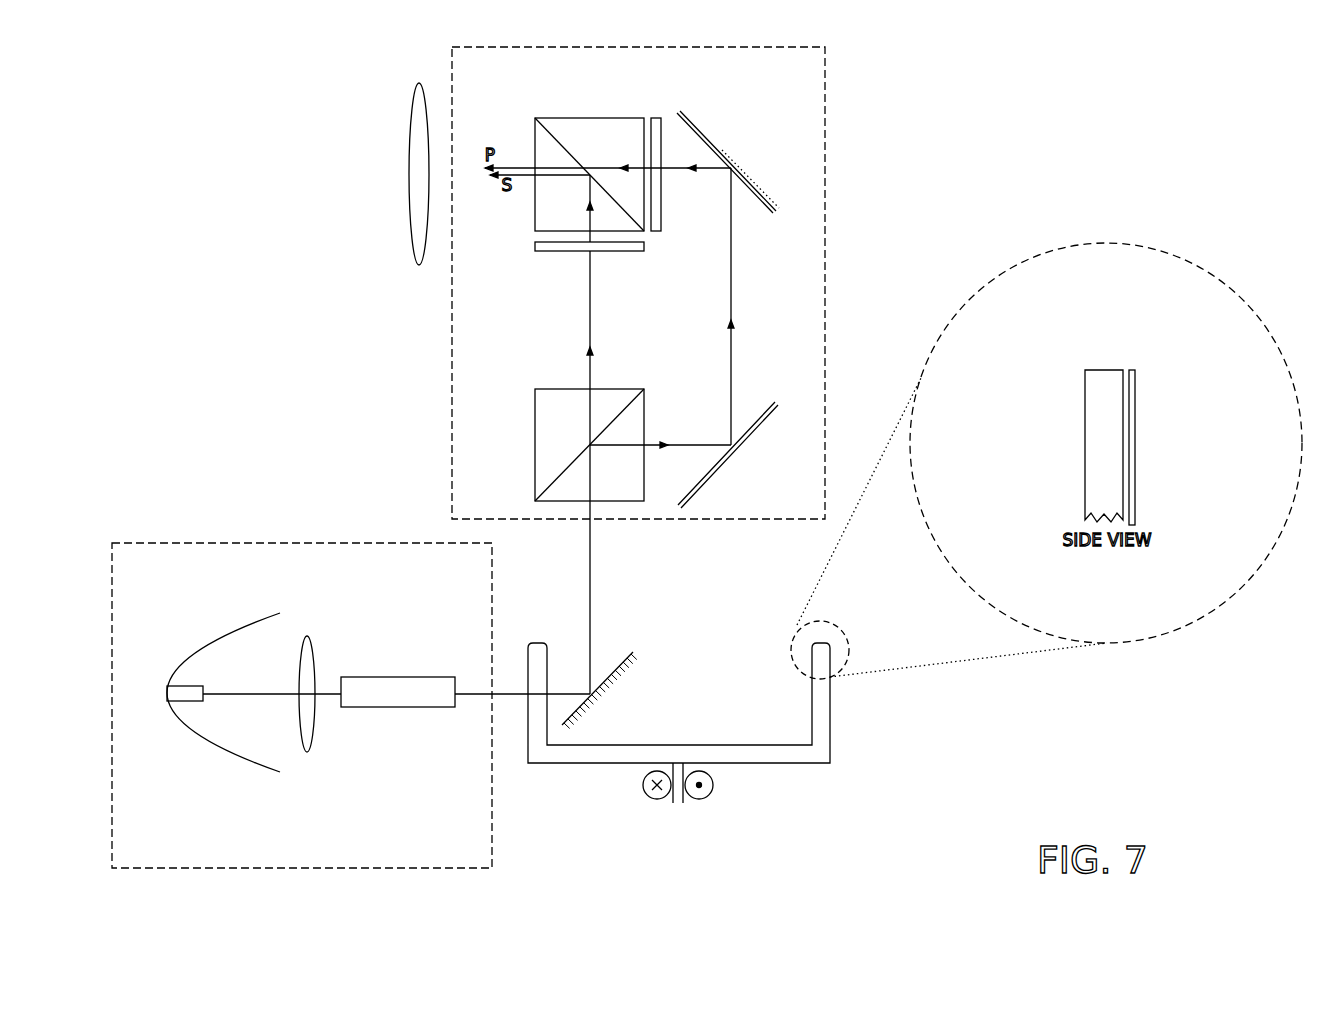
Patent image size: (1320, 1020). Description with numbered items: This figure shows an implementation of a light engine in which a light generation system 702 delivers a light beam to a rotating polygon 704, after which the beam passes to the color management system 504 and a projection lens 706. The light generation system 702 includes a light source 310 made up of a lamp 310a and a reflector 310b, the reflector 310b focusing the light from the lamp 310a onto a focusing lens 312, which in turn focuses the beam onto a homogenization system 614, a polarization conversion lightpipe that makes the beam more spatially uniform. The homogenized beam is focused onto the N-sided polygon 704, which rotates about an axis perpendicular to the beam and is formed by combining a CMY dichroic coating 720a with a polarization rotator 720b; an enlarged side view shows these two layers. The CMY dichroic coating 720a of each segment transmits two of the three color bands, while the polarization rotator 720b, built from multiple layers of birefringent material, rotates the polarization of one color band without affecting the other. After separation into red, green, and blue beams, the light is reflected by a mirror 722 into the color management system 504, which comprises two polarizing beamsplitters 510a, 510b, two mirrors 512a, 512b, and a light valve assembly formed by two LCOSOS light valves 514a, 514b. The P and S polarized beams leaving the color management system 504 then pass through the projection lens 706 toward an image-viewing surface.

The projection lens 706 is at (361, 174).
The color management system 504 is at (638, 300).
The polarizing beamsplitter 510b is at (593, 133).
The polarizing beamsplitter 510a is at (554, 426).
The mirror 512b is at (744, 162).
The mirror 512a is at (745, 455).
The LCOSOS light valve 514b is at (657, 234).
The LCOSOS light valve 514a is at (556, 252).
The light generation system 702 is at (302, 720).
The light source 310 is at (201, 701).
The reflector 310b is at (250, 617).
The lamp 310a is at (193, 686).
The focusing lens 312 is at (312, 645).
The homogenization system 614 is at (414, 707).
The polygon 704 is at (701, 748).
The mirror 722 is at (642, 689).
The polarization rotator 720b is at (1085, 470).
The CMY dichroic coating 720a is at (1135, 433).